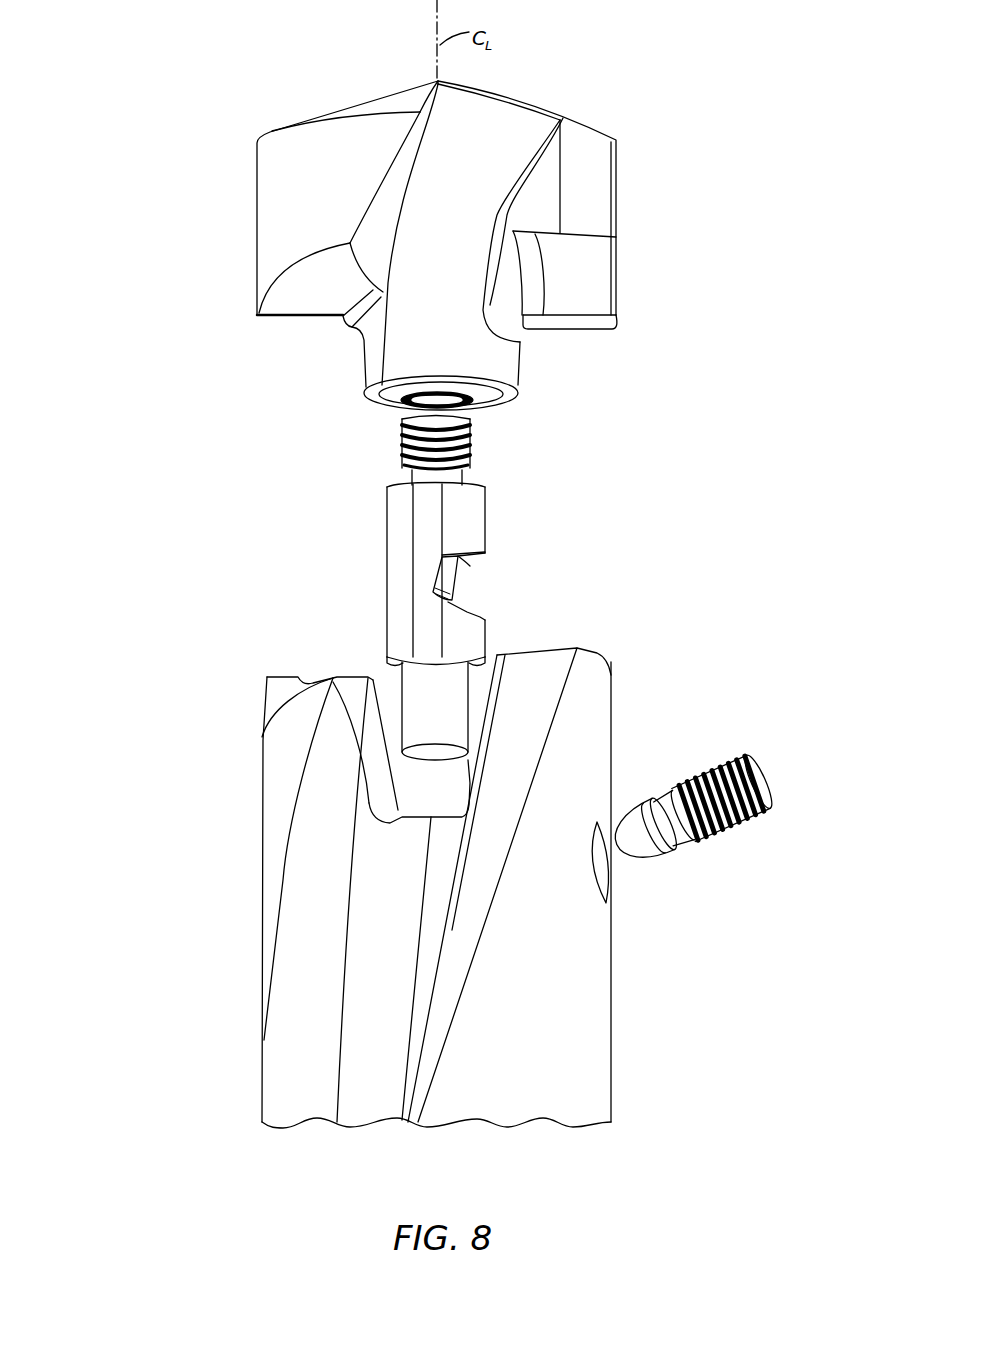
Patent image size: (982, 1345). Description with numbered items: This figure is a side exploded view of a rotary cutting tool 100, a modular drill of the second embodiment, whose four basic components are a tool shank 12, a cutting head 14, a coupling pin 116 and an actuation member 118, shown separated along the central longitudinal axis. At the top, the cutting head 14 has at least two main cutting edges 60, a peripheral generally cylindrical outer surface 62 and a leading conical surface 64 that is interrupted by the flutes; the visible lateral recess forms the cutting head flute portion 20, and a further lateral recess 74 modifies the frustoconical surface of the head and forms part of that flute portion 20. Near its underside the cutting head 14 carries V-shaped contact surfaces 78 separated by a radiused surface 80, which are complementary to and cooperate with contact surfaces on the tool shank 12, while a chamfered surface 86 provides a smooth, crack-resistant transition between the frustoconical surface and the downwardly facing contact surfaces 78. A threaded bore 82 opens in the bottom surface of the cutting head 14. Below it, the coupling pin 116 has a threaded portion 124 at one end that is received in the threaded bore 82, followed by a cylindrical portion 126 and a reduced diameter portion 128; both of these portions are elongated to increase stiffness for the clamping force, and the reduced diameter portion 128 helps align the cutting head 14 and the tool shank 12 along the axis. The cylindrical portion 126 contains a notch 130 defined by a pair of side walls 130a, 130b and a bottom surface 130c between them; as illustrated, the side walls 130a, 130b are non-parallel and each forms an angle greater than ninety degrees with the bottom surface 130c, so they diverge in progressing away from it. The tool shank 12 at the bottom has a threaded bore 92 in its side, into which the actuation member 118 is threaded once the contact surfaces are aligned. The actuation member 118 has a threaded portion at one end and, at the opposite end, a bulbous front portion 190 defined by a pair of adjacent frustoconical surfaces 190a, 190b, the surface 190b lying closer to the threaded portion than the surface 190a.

The cutting tool 100 is at (146, 86).
The cutting head 14 is at (196, 222).
The peripheral generally cylindrical outer surface 62 is at (276, 181).
The leading conical surface 64 is at (398, 100).
The main cutting edge 60 is at (431, 100).
The lateral recess 74 is at (447, 325).
The V-shaped contact surface 78 is at (313, 283).
The radiused surface 80 is at (600, 328).
The cutting head flute portion 20 is at (408, 325).
The chamfered surface 86 is at (362, 332).
The threaded bore 82 is at (472, 406).
The threaded portion 124 is at (400, 432).
The coupling pin 116 is at (530, 508).
The cylindrical portion 126 is at (398, 562).
The notch 130 is at (516, 582).
The side wall 130a is at (482, 609).
The side wall 130b is at (486, 566).
The bottom surface 130c is at (466, 580).
The reduced diameter portion 128 is at (420, 690).
The tool shank 12 is at (196, 780).
The threaded bore 92 is at (598, 824).
The bulbous front portion 190 is at (715, 815).
The frustoconical surface 190a is at (624, 862).
The frustoconical surface 190b is at (660, 848).
The actuation member 118 is at (742, 838).